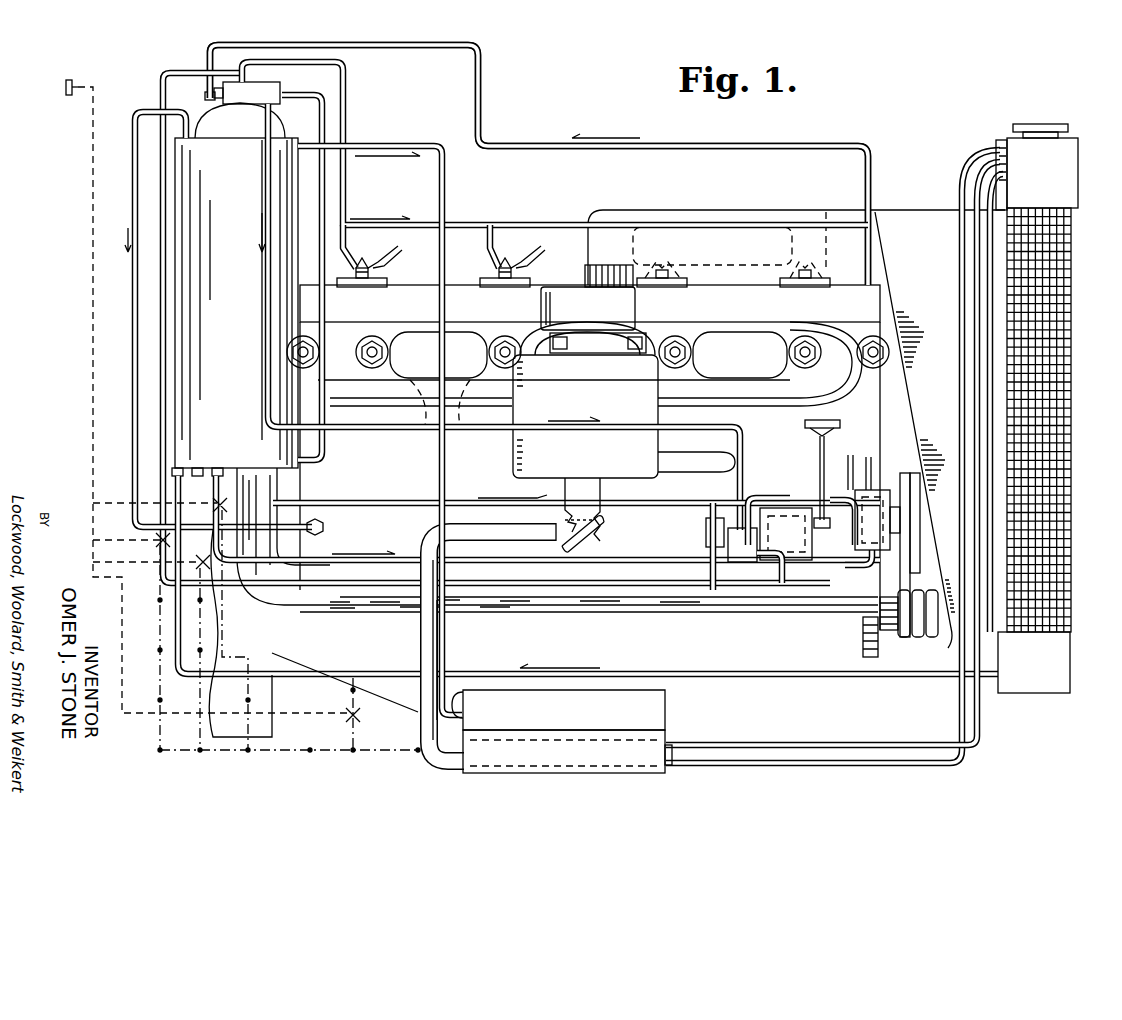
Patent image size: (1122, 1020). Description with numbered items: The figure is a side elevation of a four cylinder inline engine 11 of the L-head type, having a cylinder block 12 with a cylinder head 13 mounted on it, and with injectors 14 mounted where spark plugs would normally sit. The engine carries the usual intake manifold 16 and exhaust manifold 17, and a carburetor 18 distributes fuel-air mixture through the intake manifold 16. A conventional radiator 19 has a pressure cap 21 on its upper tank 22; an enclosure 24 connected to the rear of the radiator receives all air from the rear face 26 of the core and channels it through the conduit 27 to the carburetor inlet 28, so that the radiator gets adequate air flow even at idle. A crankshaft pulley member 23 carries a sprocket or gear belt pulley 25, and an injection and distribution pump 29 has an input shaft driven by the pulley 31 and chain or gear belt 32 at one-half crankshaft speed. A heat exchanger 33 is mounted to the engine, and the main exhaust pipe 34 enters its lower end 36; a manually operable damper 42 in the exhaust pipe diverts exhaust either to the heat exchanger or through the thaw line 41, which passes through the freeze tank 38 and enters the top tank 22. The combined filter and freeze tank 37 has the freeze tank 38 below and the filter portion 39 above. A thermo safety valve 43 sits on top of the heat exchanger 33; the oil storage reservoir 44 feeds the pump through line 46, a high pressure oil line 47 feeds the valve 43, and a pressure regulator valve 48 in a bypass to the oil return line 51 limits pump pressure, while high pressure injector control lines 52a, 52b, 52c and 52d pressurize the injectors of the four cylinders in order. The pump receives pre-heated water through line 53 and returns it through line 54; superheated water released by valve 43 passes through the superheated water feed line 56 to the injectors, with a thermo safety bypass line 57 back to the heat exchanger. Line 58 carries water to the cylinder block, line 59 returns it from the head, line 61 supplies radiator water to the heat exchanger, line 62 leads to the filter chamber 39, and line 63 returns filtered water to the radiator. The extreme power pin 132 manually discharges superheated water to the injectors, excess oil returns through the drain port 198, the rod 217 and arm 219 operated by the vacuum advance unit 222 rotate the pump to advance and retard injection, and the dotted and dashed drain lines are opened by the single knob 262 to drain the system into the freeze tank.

The engine 11 is at (900, 412).
The cylinder block 12 is at (408, 460).
The cylinder head 13 is at (478, 315).
The injectors 14 is at (382, 272).
The intake manifold 16 is at (682, 394).
The exhaust manifold 17 is at (678, 448).
The carburetor 18 is at (593, 319).
The radiator 19 is at (1070, 372).
The pressure cap 21 is at (1038, 124).
The upper tank 22 is at (1060, 165).
The crankshaft pulley member 23 is at (870, 625).
The enclosure 24 is at (935, 313).
The sprocket or gear belt pulley 25 is at (892, 596).
The rear face 26 is at (1003, 330).
The conduit 27 is at (715, 215).
The carburetor inlet 28 is at (584, 275).
The injection and distribution pump 29 is at (795, 528).
The sprocket or gear belt pulley 31 is at (912, 535).
The chain or gear belt 32 is at (918, 572).
The heat exchanger 33 is at (243, 273).
The engine main exhaust pipe 34 is at (333, 606).
The lower end 36 is at (282, 485).
The combined filter and freeze tank 37 is at (672, 710).
The freeze tank 38 is at (556, 770).
The filter portion 39 is at (605, 718).
The thaw line 41 is at (420, 640).
The manually operable damper 42 is at (600, 540).
The thermo safety valve 43 is at (258, 101).
The oil storage reservoir 44 is at (750, 552).
The line 46 is at (772, 495).
The high pressure oil line 47 is at (158, 93).
The pressure regulator valve 48 is at (706, 525).
The oil return line 51 is at (264, 162).
The high pressure injector control line 52a is at (818, 262).
The high pressure injector control line 52b is at (690, 262).
The high pressure injector control line 52c is at (541, 246).
The high pressure injector control line 52d is at (398, 246).
The line 53 is at (405, 556).
The line 54 is at (337, 501).
The superheated water feed line 56 is at (346, 82).
The thermo safety bypass line 57 is at (319, 92).
The line 58 is at (131, 160).
The line 59 is at (268, 45).
The line 61 is at (712, 672).
The line 62 is at (360, 145).
The line 63 is at (697, 757).
The pin 132 is at (208, 66).
The drain port 198 is at (766, 560).
The rod 217 is at (818, 463).
The arm 219 is at (830, 526).
The vacuum advance unit 222 is at (815, 432).
The knob 262 is at (64, 87).